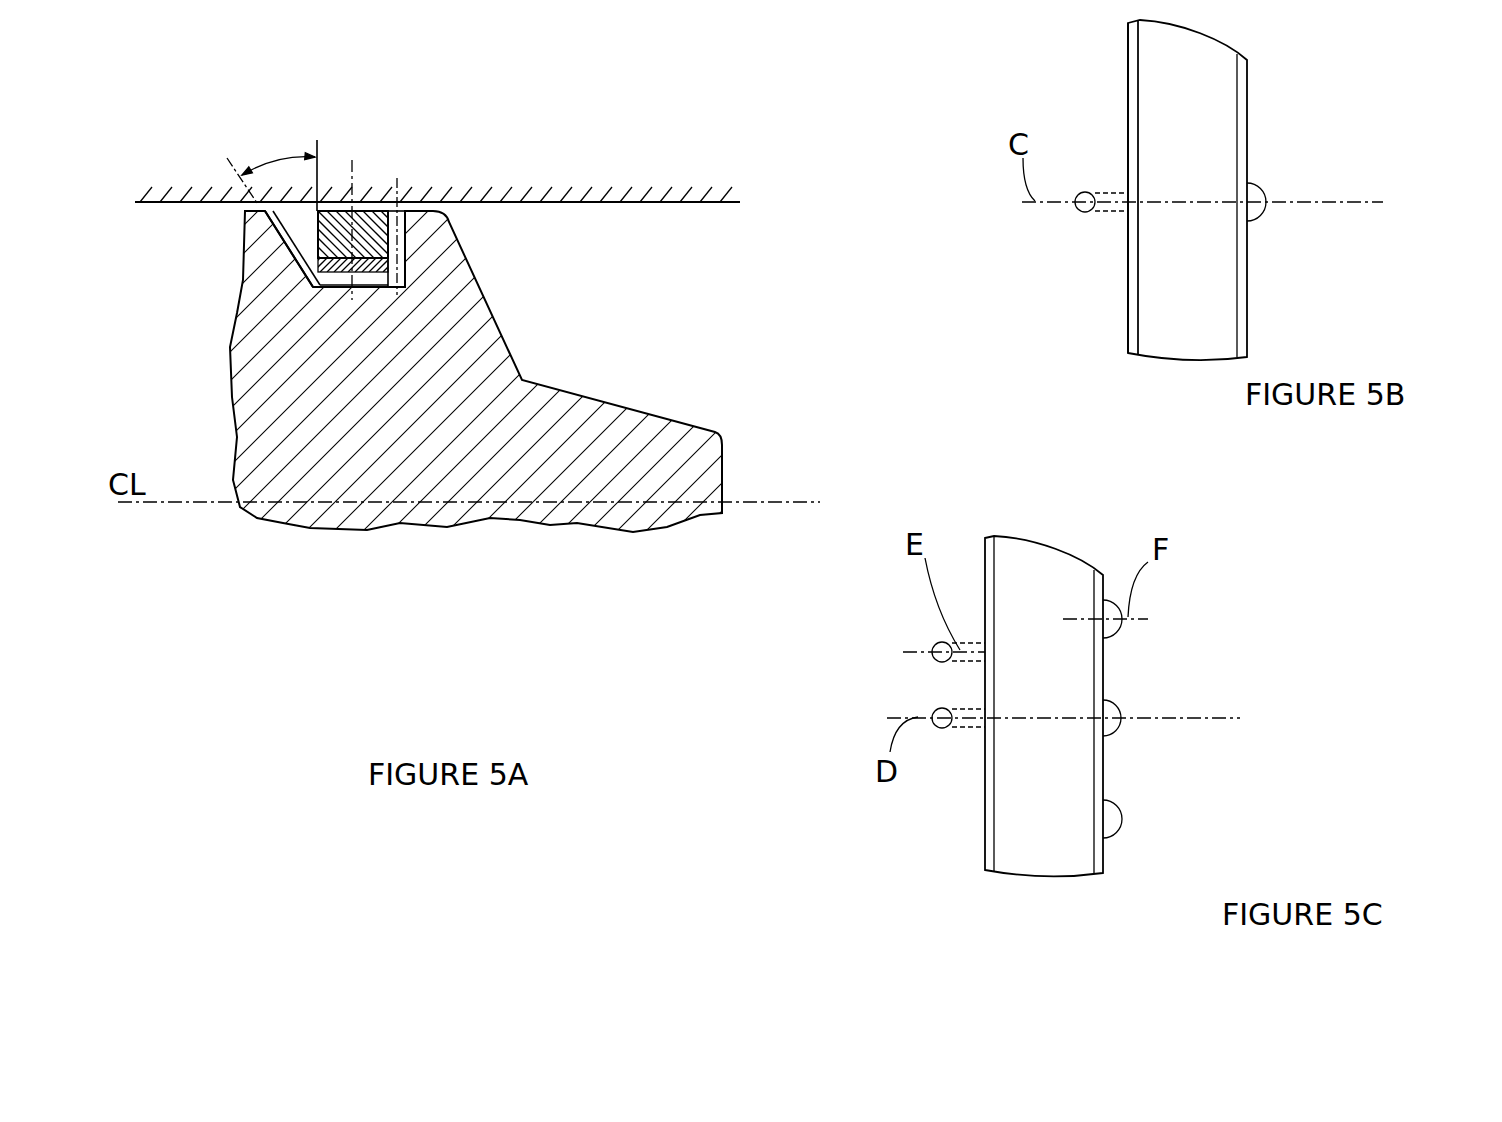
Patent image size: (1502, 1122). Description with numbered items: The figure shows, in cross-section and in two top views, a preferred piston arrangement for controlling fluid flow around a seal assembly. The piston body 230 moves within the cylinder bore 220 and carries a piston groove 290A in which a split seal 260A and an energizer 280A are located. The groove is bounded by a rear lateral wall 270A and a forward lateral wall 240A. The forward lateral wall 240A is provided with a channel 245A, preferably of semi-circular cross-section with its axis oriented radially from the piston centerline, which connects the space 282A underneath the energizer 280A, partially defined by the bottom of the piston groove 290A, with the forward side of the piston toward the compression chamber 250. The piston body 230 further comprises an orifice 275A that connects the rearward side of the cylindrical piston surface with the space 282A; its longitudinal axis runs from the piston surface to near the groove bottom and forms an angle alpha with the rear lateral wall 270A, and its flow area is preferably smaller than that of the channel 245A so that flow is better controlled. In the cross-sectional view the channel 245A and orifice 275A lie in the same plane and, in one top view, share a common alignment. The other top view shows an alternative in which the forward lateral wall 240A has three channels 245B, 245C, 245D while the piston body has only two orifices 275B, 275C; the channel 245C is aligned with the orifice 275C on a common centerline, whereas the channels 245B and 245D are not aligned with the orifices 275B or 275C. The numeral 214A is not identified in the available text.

In FIG. 5A, the cylinder bore 220 is at (187, 200).
In FIG. 5A, the piston body 230 is at (287, 403).
In FIG. 5A, the split seal 260A is at (347, 228).
In FIG. 5A, the space underneath the energizer 282A is at (318, 272).
In FIG. 5A, the rear lateral wall 270A is at (304, 240).
In FIG. 5A, the orifice 275A is at (318, 257).
In FIG. 5B, the orifice 275A is at (1076, 207).
In FIG. 5C, the orifice 275B is at (937, 644).
In FIG. 5C, the orifice 275C is at (933, 714).
In FIG. 5A, the forward lateral wall 240A is at (400, 215).
In FIG. 5B, the forward lateral wall 240A is at (1256, 264).
In FIG. 5C, the forward lateral wall 240A is at (1112, 855).
In FIG. 5A, the channel 245A is at (400, 253).
In FIG. 5B, the channel 245A is at (1264, 211).
In FIG. 5C, the channel 245B is at (1114, 627).
In FIG. 5C, the channel 245C is at (1119, 712).
In FIG. 5C, the channel 245D is at (1119, 808).
In FIG. 5A, the energizer 280A is at (403, 288).
In FIG. 5B, the energizer 280A is at (1242, 102).
In FIG. 5A, the piston groove 290A is at (365, 296).
In FIG. 5B, the piston groove 290A is at (1120, 272).
In FIG. 5A, the compression chamber 250 is at (728, 360).
In FIG. 5B, the plate face 214A is at (1187, 310).
In FIG. 5C, the plate face 214A is at (1043, 828).